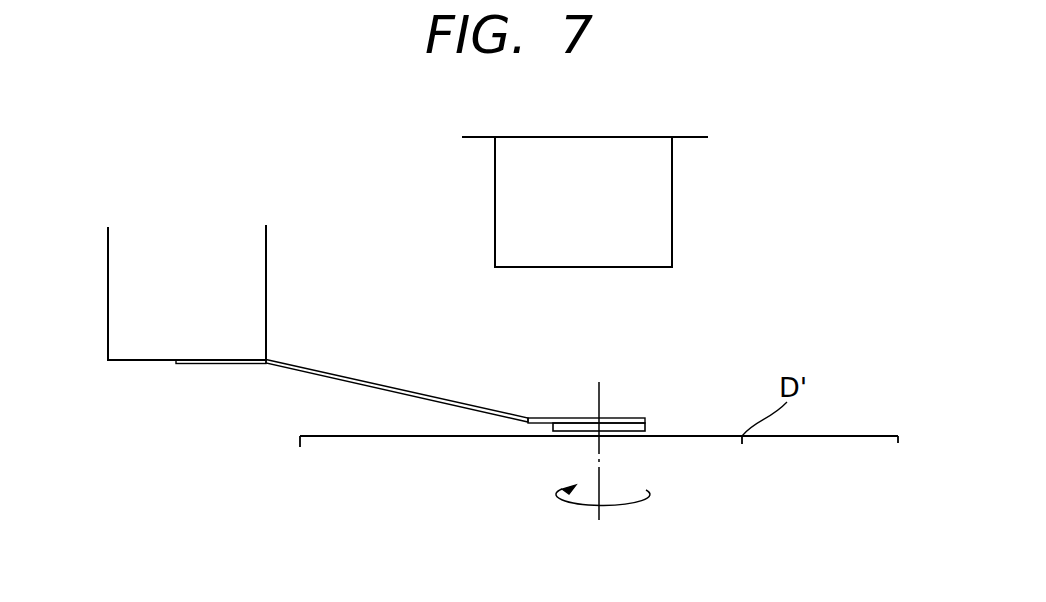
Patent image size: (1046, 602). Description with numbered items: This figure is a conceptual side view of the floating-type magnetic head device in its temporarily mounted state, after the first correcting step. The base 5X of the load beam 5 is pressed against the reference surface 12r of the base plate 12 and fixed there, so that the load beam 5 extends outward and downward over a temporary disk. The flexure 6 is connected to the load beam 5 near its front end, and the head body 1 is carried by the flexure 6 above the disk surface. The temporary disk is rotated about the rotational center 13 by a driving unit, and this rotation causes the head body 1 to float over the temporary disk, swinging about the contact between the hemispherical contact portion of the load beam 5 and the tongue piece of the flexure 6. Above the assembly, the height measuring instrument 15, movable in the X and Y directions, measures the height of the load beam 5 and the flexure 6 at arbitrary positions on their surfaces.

The base plate 12 is at (250, 283).
The reference surface 12r is at (143, 362).
The base of the load beam 5X is at (215, 363).
The load beam 5 is at (430, 393).
The flexure 6 is at (590, 418).
The head body 1 is at (647, 425).
The rotational center 13 is at (598, 515).
The height measuring instrument 15 is at (653, 197).